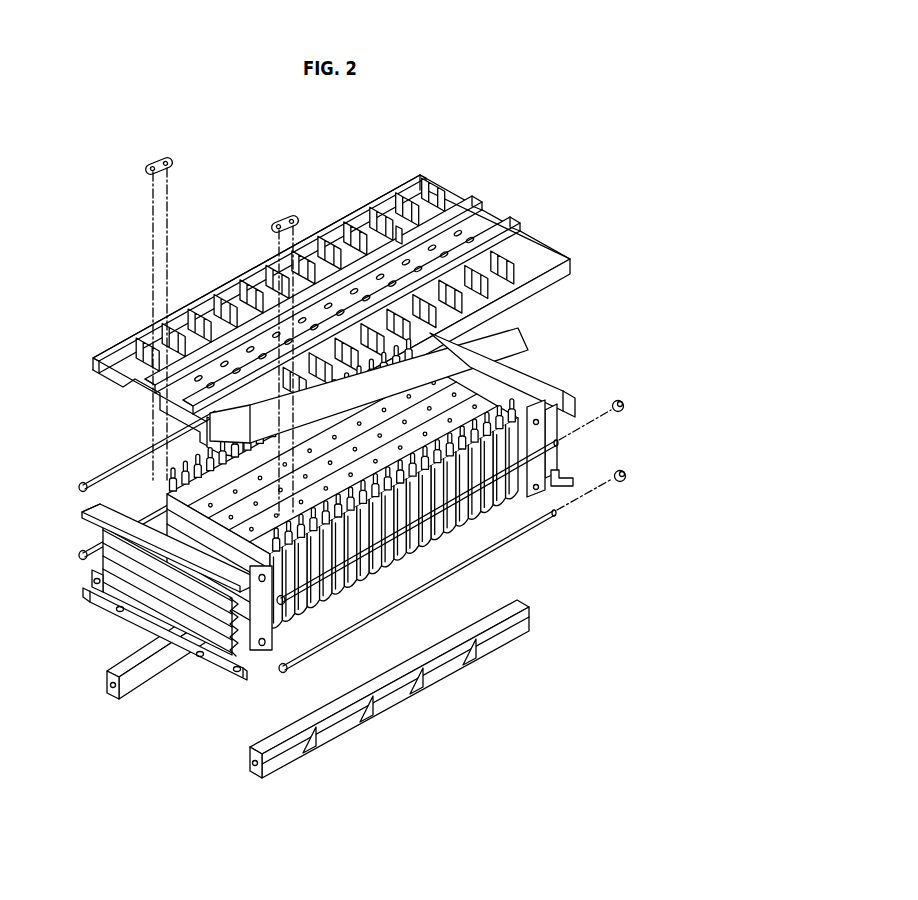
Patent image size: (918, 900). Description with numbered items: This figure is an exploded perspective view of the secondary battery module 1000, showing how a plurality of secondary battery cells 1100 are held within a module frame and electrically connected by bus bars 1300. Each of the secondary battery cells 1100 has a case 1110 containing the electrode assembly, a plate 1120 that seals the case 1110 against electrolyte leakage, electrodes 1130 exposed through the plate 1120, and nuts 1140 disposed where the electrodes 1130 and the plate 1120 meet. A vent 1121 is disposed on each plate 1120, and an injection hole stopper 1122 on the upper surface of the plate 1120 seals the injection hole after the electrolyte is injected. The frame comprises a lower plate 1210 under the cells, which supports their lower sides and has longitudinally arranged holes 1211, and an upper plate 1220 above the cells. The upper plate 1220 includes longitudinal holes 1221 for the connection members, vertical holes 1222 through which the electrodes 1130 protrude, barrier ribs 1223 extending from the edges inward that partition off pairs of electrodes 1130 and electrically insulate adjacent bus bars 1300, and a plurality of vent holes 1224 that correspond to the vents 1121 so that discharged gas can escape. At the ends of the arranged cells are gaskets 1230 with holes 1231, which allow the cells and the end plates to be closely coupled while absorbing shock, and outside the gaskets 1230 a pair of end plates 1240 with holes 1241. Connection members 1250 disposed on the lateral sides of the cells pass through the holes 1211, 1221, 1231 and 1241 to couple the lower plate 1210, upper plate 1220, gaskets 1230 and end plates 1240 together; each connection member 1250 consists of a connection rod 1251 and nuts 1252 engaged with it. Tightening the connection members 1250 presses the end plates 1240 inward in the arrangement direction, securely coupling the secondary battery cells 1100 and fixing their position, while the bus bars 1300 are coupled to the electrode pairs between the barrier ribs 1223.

The secondary battery module 1000 is at (572, 157).
The secondary battery cells 1100 is at (342, 552).
The case 1110 is at (336, 595).
The plate 1120 is at (413, 406).
The vent 1121 is at (455, 352).
The injection hole stopper 1122 is at (478, 366).
The electrodes 1130 is at (85, 487).
The nuts 1140 is at (85, 554).
The lower plate 1210 is at (318, 715).
The holes 1211 is at (255, 770).
The upper plate 1220 is at (327, 304).
The holes 1221 is at (212, 448).
The holes 1222 is at (338, 226).
The barrier ribs 1223 is at (396, 235).
The vent holes 1224 is at (404, 257).
The gaskets 1230 is at (184, 671).
The holes 1231 is at (250, 652).
The end plates 1240 is at (134, 592).
The holes 1241 is at (93, 581).
The connection members 1250 is at (463, 537).
The connection rod 1251 is at (540, 526).
The nuts 1252 is at (630, 468).
The bus bars 1300 is at (155, 164).